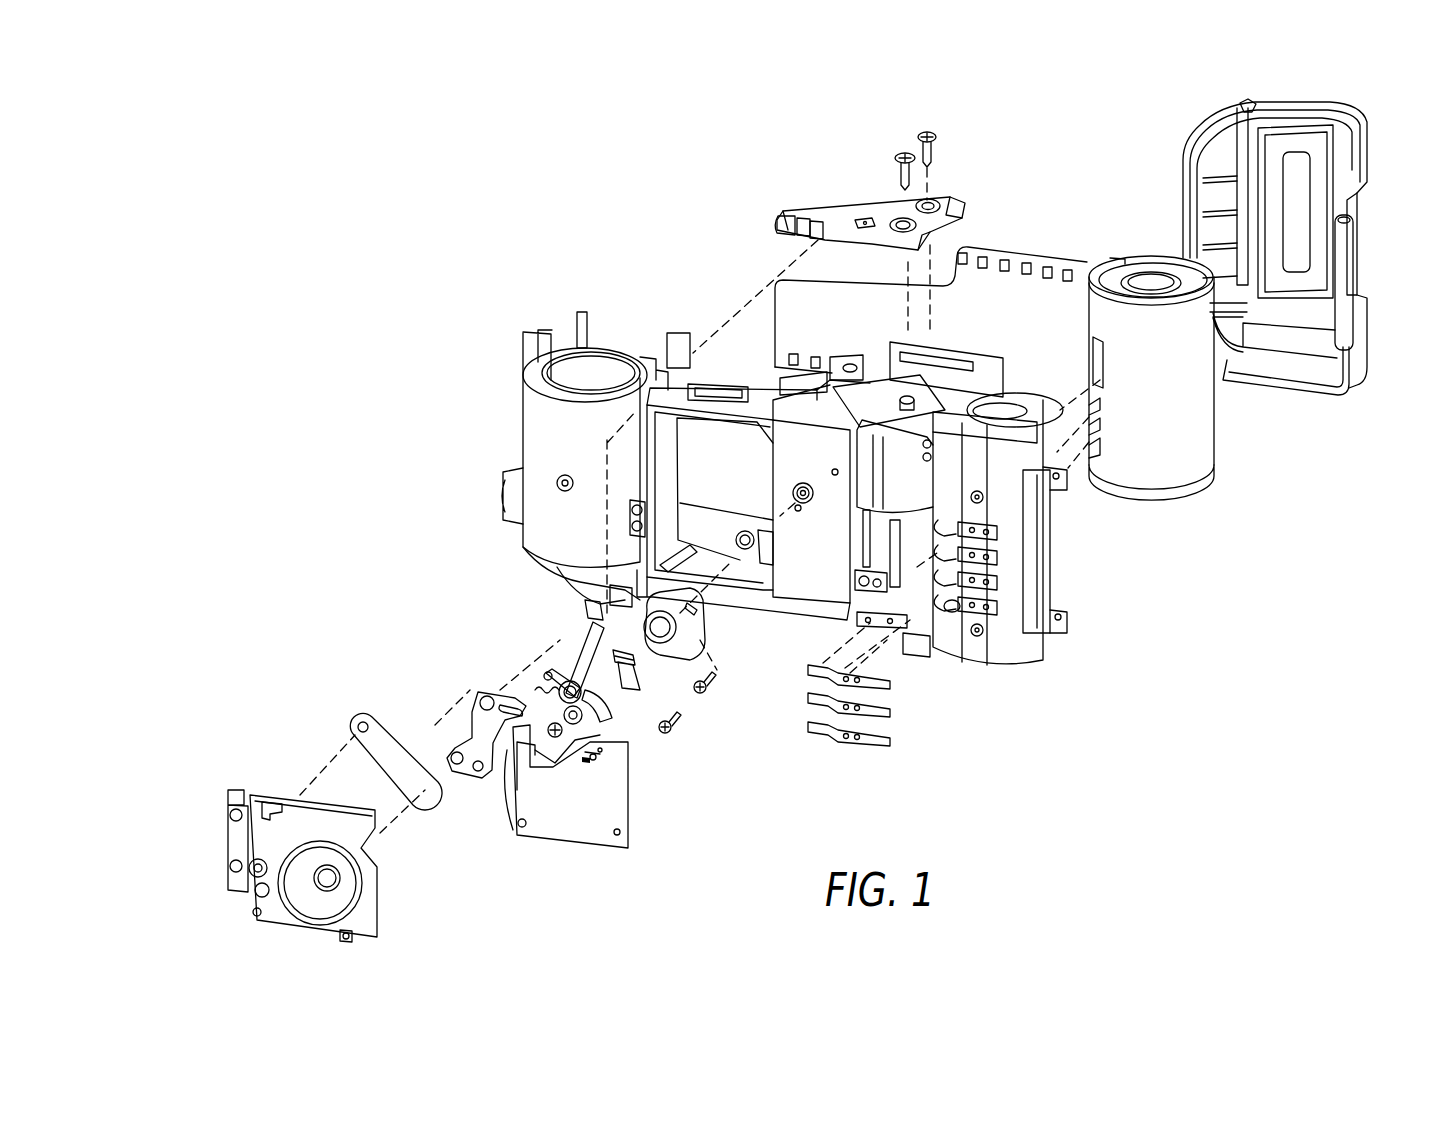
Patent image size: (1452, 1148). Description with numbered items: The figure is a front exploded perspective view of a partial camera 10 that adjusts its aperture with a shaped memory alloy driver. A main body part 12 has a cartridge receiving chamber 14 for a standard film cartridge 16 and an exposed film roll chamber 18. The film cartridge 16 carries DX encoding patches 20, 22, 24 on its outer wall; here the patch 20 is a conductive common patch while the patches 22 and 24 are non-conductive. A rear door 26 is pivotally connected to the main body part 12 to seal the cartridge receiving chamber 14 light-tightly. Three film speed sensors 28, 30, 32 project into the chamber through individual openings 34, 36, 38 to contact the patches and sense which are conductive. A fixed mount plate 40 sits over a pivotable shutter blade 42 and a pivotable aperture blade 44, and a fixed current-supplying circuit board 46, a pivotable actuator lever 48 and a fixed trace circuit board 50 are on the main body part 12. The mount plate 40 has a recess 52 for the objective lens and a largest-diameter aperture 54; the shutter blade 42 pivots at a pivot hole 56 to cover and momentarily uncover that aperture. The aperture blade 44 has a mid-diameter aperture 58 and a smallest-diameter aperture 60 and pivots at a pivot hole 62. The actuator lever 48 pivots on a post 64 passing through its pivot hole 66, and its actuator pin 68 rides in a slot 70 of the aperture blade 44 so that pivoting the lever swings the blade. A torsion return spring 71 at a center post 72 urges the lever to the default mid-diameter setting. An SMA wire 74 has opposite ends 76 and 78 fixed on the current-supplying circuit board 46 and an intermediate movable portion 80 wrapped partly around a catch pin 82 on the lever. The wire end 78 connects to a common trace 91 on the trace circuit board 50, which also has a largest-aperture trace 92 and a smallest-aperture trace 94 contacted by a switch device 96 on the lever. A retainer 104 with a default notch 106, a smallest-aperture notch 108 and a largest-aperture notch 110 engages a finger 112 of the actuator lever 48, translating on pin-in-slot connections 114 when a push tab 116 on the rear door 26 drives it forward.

The partial camera 10 is at (408, 191).
The main body part 12 is at (518, 401).
The cartridge receiving chamber 14 is at (1010, 388).
The film cartridge 16 is at (1146, 250).
The exposed film roll chamber 18 is at (600, 368).
The patch 20 is at (1105, 442).
The patch 22 is at (1100, 422).
The patch 24 is at (1098, 400).
The rear door 26 is at (1335, 110).
The film speed sensor 28 is at (892, 736).
The film speed sensor 30 is at (893, 714).
The film speed sensor 32 is at (891, 684).
The opening 34 is at (953, 612).
The opening 36 is at (975, 570).
The opening 38 is at (941, 517).
The mount plate 40 is at (384, 926).
The shutter blade 42 is at (422, 813).
The aperture blade 44 is at (455, 722).
The current-supplying circuit board 46 is at (592, 846).
The actuator lever 48 is at (582, 644).
The trace circuit board 50 is at (705, 621).
The recess 52 is at (327, 905).
The f/5.6 aperture 54 is at (320, 880).
The pivot hole 56 is at (356, 713).
The f/8 aperture 58 is at (459, 767).
The f/11 aperture 60 is at (479, 773).
The pivot hole 62 is at (485, 690).
The post 64 is at (806, 501).
The pivot hole 66 is at (558, 703).
The actuator pin 68 is at (545, 676).
The slot 70 is at (480, 704).
The torsion return spring 71 is at (612, 680).
The center post 72 is at (610, 717).
The SMA wire 74 is at (553, 760).
The wire end 76 is at (597, 757).
The wire end 78 is at (507, 755).
The intermediate movable portion 80 is at (536, 786).
The catch pin 82 is at (595, 757).
The common trace 91 is at (650, 623).
The f/5.6 trace 92 is at (600, 600).
The f/11 trace 94 is at (620, 597).
The switch device 96 is at (653, 678).
The retainer 104 is at (847, 200).
The f/8 notch 106 is at (811, 221).
The f/11 notch 108 is at (797, 217).
The f/5.6 notch 110 is at (778, 212).
The finger 112 is at (578, 648).
The pin-in-slot connections 114 is at (930, 200).
The push tab 116 is at (1247, 115).